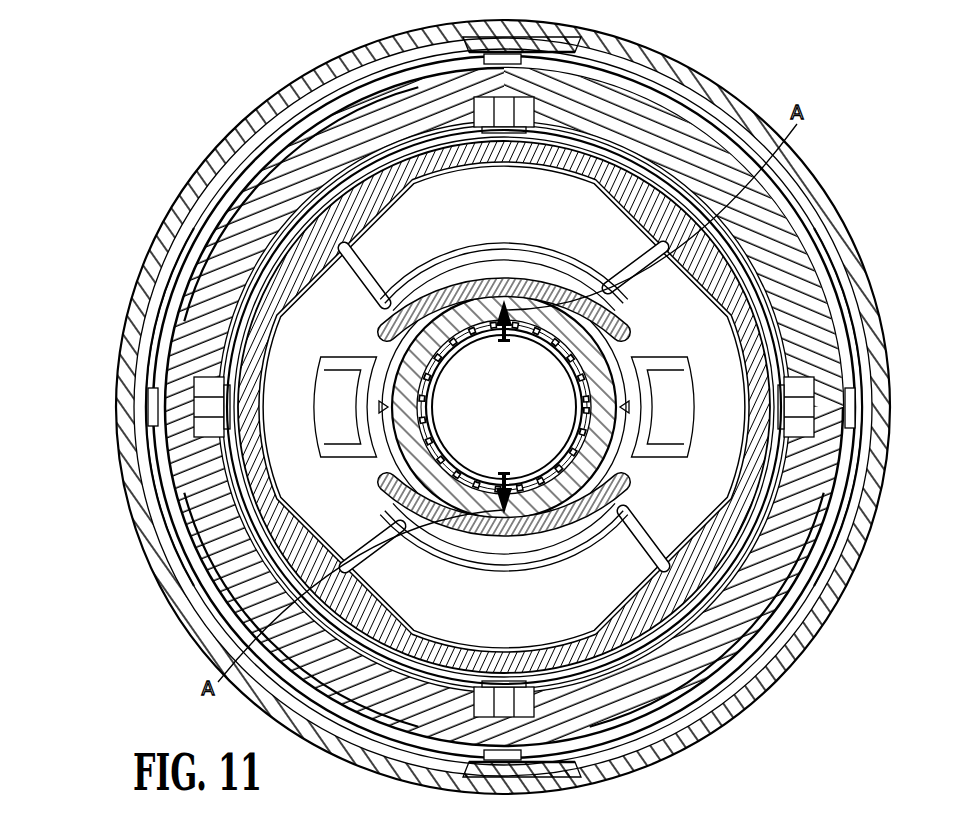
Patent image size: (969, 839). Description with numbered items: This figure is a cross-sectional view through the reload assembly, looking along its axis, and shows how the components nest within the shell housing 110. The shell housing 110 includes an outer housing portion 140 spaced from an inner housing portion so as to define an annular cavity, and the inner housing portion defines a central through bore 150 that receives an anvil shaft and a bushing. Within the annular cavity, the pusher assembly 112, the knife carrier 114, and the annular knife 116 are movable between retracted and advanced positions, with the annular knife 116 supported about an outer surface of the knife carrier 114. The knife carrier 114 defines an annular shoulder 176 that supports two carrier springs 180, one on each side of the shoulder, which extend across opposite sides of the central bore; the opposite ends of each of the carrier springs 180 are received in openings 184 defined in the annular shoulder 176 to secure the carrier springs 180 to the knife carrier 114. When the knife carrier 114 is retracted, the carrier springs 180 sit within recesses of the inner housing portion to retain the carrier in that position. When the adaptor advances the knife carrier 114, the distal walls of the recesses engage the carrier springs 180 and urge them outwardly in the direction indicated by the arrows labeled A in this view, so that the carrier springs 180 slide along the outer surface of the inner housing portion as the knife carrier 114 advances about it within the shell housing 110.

The shell housing 110 is at (180, 195).
The pusher assembly 112 is at (202, 318).
The knife carrier 114 is at (770, 318).
The annular knife 116 is at (848, 427).
The outer housing portion 140 is at (703, 92).
The through bore 150 is at (781, 596).
The annular shoulder 176 is at (378, 500).
The carrier springs 180 is at (520, 283).
The openings 184 is at (350, 487).